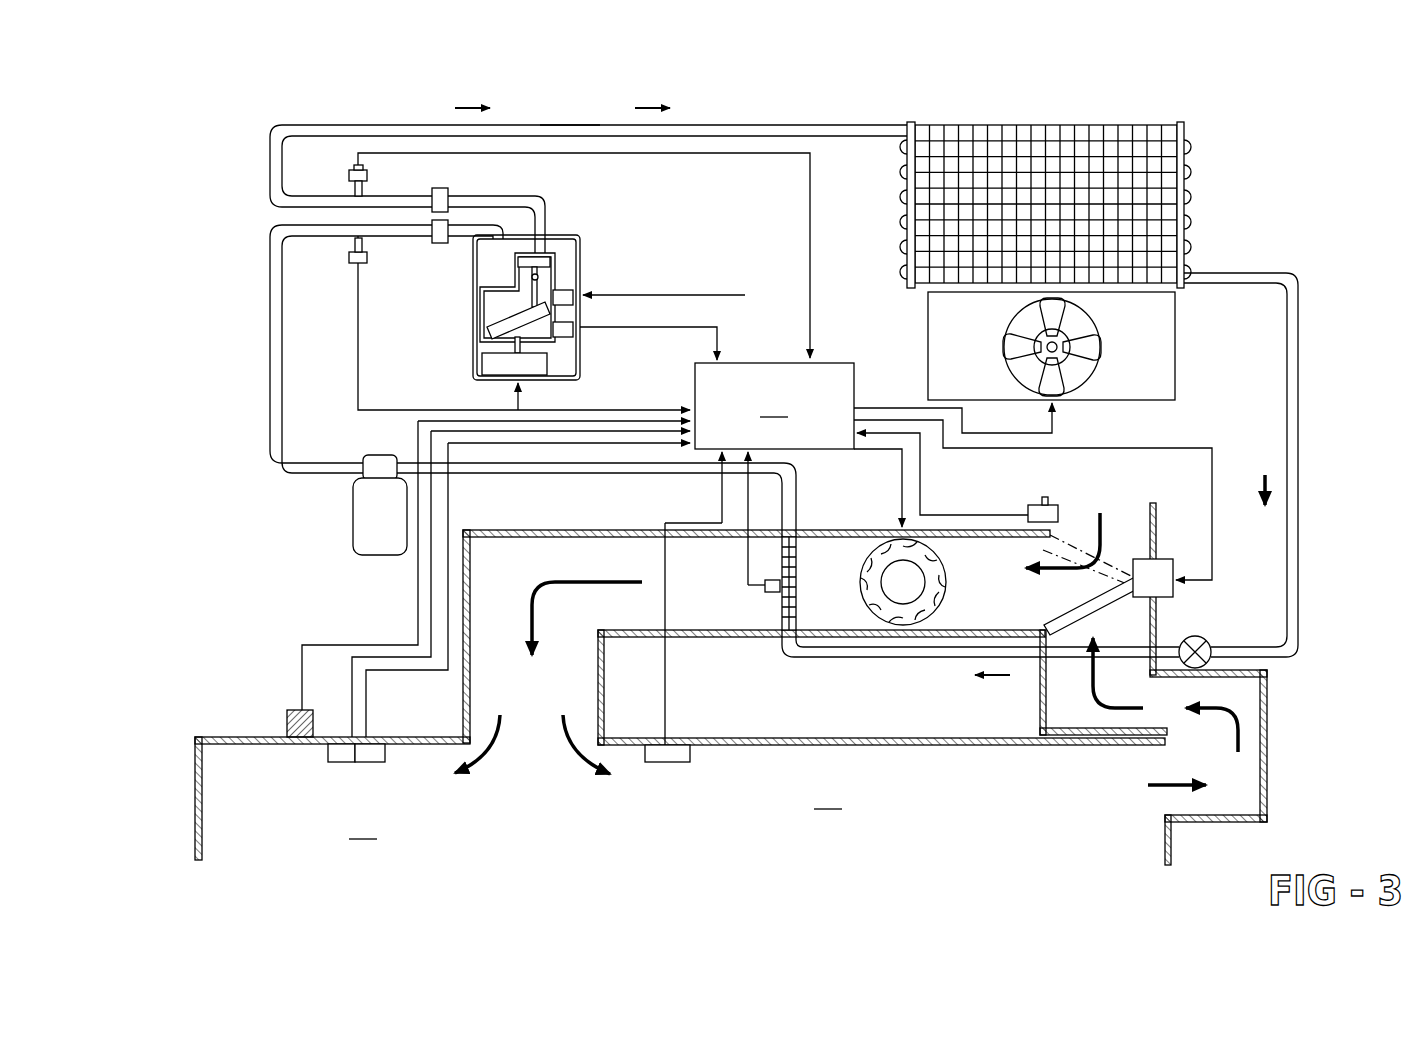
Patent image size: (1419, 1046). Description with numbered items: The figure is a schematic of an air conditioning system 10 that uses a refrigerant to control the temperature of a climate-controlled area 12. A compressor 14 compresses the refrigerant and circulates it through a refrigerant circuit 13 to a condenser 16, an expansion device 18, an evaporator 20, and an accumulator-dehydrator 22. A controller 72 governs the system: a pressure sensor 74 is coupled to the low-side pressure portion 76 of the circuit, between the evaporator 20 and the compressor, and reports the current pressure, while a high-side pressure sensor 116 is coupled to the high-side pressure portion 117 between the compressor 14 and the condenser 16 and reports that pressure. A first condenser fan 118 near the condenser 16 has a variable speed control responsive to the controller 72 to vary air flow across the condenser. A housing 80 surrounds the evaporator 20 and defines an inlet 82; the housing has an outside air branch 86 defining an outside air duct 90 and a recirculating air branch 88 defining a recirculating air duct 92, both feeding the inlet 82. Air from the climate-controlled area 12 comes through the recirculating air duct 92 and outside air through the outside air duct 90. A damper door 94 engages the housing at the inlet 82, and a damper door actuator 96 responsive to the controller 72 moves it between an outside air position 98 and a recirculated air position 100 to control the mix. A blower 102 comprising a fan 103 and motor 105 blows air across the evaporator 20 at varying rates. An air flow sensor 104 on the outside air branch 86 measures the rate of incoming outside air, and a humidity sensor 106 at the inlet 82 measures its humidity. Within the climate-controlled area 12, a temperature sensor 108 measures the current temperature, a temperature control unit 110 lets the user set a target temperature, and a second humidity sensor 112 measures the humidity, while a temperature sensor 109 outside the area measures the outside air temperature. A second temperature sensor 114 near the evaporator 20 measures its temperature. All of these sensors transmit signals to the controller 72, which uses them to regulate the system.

The air conditioning system 10 is at (232, 140).
The climate-controlled area 12 is at (595, 711).
The refrigerant circuit 13 is at (724, 116).
The compressor 14 is at (600, 268).
The condenser 16 is at (1040, 125).
The expansion device 18 is at (1205, 643).
The evaporator 20 is at (780, 615).
The accumulator-dehydrator 22 is at (360, 513).
The controller 72 is at (578, 550).
The pressure sensor 74 is at (368, 260).
The low-side pressure portion 76 is at (268, 264).
The housing 80 is at (815, 530).
The inlet 82 is at (1045, 598).
The outside air branch 86 is at (1158, 515).
The recirculating air branch 88 is at (1040, 722).
The outside air duct 90 is at (1153, 503).
The recirculating air duct 92 is at (1128, 676).
The damper door 94 is at (1110, 610).
The damper door actuator 96 is at (1175, 592).
The outside air position 98 is at (1030, 666).
The recirculated air position 100 is at (1085, 530).
The blower 102 is at (866, 620).
The fan 103 is at (943, 615).
The air flow sensor 104 is at (1028, 512).
The motor 105 is at (905, 583).
The humidity sensor 106 is at (1047, 508).
The temperature sensor 108 is at (378, 748).
The temperature sensor 109 is at (290, 725).
The temperature control unit 110 is at (335, 748).
The second humidity sensor 112 is at (663, 760).
The second temperature sensor 114 is at (765, 588).
The high-side pressure sensor 116 is at (357, 168).
The high-side pressure portion 117 is at (543, 129).
The first condenser fan 118 is at (1100, 347).